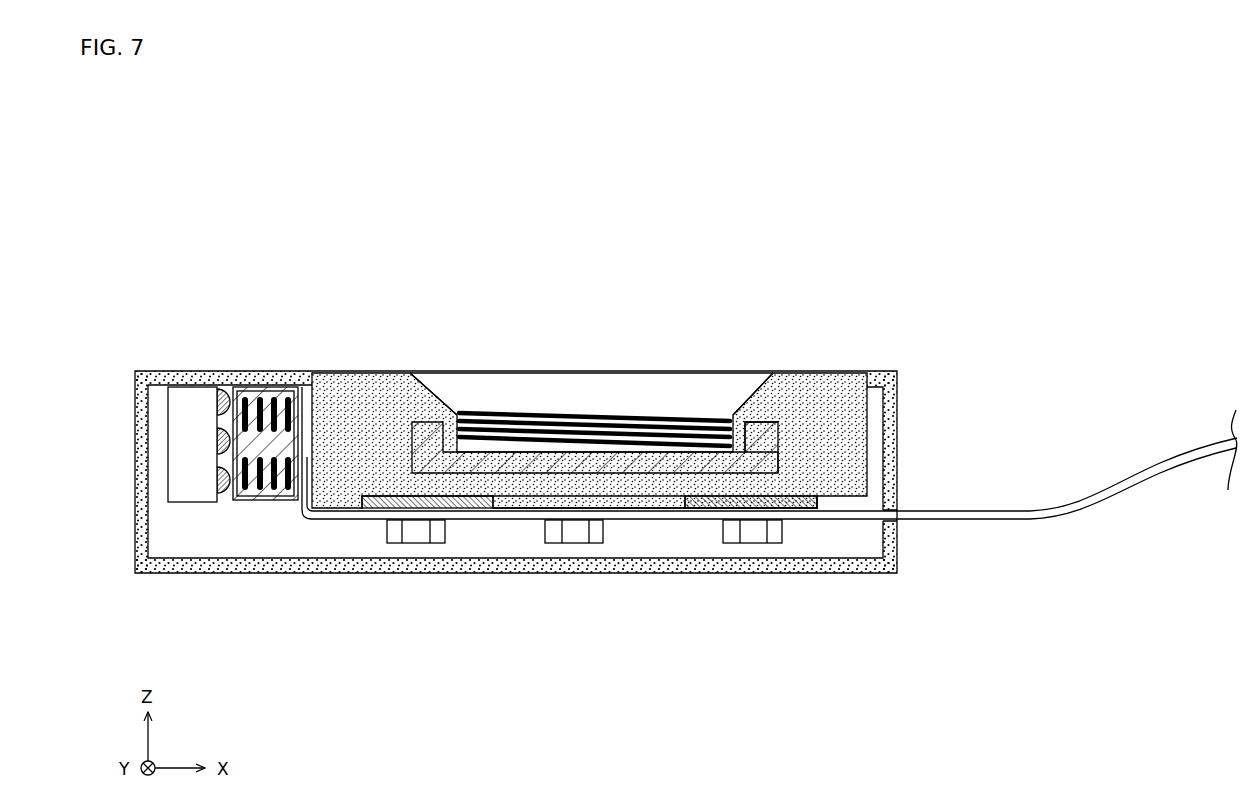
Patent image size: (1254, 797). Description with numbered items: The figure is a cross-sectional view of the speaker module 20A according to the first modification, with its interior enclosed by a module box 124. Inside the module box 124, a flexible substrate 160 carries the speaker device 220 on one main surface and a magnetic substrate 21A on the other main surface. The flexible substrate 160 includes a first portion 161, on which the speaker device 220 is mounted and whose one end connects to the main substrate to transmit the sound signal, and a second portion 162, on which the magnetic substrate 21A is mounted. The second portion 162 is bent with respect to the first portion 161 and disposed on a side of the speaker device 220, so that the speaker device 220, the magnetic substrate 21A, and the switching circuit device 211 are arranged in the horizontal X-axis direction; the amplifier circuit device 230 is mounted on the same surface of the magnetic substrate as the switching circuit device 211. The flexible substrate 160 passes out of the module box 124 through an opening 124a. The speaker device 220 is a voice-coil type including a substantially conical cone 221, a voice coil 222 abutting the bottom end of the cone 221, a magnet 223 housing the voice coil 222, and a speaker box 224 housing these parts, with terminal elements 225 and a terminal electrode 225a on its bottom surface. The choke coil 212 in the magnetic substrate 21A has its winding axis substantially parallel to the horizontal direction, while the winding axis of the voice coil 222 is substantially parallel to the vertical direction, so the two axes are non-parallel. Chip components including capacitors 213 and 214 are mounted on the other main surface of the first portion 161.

The speaker module 20A is at (992, 248).
The module box 124 is at (890, 375).
The opening 124a is at (893, 510).
The flexible substrate 160 is at (1150, 467).
The first portion 161 is at (388, 511).
The second portion 162 is at (278, 496).
The switching circuit device 211 is at (548, 446).
The choke coil 212 is at (287, 390).
The capacitor 213 is at (405, 545).
The capacitor 214 is at (571, 545).
The magnetic substrate 21A is at (210, 490).
The speaker device 220 is at (847, 336).
The cone 221 is at (487, 387).
The voice coil 222 is at (592, 412).
The magnet 223 is at (766, 438).
The speaker box 224 is at (857, 432).
The terminal element 225 is at (362, 495).
The terminal electrode 225a is at (817, 503).
The amplifier circuit device 230 is at (200, 390).